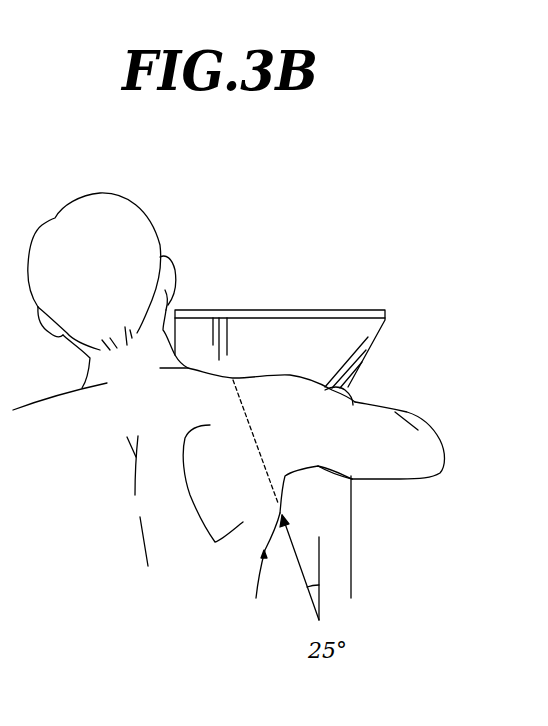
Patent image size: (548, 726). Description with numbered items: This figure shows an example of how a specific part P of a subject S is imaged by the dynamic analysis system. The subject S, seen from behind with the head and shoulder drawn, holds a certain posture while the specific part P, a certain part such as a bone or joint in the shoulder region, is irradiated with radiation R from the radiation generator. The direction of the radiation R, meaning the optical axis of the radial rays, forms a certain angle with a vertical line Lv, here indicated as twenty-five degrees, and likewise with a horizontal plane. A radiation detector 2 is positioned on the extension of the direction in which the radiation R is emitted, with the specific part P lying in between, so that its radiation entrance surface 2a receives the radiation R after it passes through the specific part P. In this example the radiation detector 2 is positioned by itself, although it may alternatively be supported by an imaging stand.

The subject S is at (130, 210).
The radiation detector 2 is at (271, 305).
The radiation entrance surface 2a is at (355, 350).
The specific part P is at (290, 437).
The vertical line Lv is at (320, 563).
The radiation R is at (302, 572).